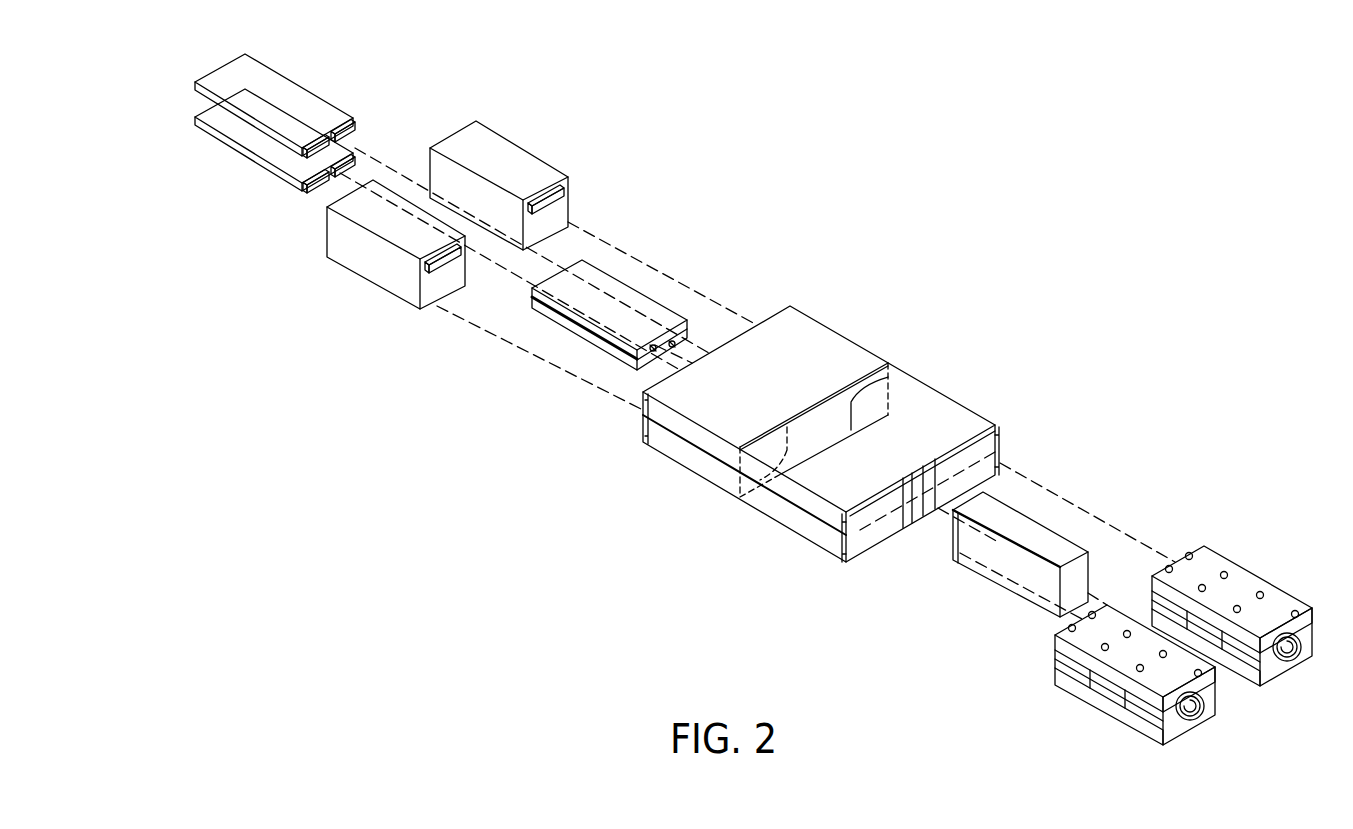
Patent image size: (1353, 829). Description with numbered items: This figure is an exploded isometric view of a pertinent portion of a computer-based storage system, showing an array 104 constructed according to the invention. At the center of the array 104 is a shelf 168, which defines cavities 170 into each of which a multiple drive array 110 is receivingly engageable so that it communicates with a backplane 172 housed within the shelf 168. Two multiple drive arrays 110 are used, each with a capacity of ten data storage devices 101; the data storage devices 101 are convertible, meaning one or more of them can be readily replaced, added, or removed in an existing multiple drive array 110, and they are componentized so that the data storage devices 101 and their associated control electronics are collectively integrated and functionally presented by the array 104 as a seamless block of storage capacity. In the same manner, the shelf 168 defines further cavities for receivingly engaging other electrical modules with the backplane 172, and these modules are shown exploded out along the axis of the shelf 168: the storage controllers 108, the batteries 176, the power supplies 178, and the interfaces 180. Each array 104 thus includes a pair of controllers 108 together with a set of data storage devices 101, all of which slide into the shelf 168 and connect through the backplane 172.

The array 104 is at (905, 242).
The data storage devices 101 is at (1150, 587).
The controllers 108 is at (1038, 520).
The multiple drive array 110 is at (1227, 548).
The shelf 168 is at (710, 475).
The cavities 170 is at (1003, 440).
The backplane 172 is at (815, 400).
The batteries 176 is at (633, 293).
The power supplies 178 is at (508, 152).
The interfaces 180 is at (309, 111).